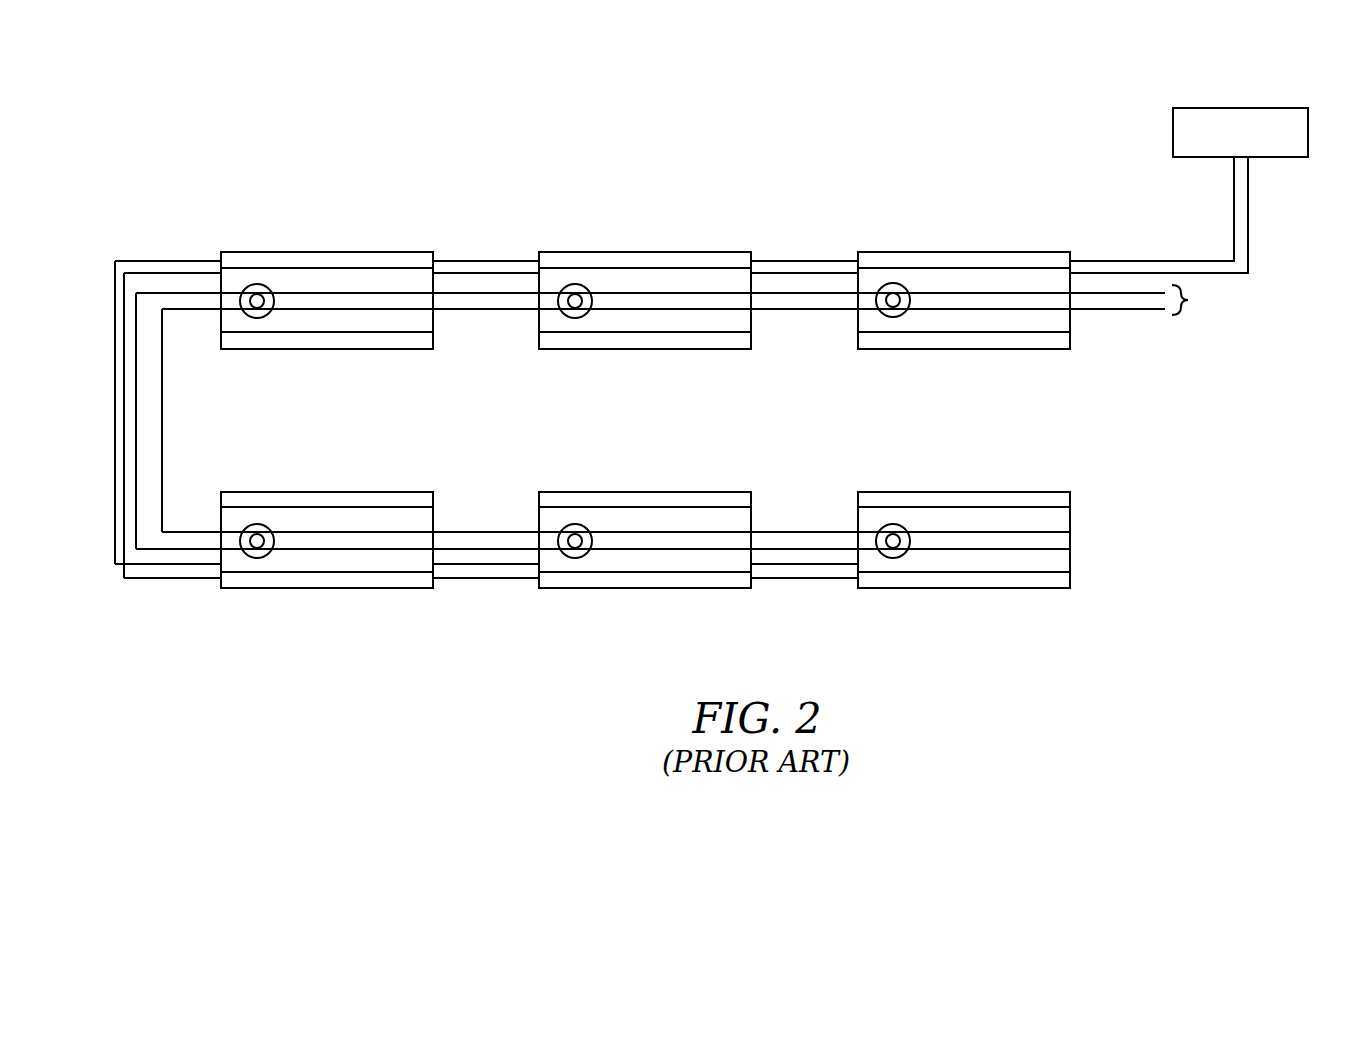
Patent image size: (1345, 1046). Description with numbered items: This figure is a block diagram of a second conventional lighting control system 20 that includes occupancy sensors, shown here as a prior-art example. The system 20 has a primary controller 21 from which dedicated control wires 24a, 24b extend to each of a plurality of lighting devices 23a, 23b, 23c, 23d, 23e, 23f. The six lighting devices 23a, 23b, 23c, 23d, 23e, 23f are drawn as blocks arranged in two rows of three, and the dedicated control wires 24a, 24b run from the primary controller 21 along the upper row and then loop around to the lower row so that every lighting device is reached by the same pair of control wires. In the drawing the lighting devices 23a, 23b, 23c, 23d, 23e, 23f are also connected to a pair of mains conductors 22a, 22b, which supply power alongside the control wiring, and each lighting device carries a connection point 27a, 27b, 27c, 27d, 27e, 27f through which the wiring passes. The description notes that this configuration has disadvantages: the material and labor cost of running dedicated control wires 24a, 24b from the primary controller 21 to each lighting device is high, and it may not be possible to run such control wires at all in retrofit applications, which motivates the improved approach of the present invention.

The system 20 is at (1207, 540).
The primary controller 21 is at (1240, 107).
The mains wire 22a is at (1197, 324).
The mains wire 22b is at (1242, 347).
The lighting device 23a is at (965, 252).
The lighting device 23b is at (645, 252).
The lighting device 23c is at (328, 252).
The lighting device 23d is at (328, 589).
The lighting device 23e is at (643, 589).
The lighting device 23f is at (963, 589).
The dedicated control wire 24a is at (1150, 260).
The dedicated control wire 24b is at (1248, 215).
The connector 27a is at (893, 317).
The connector 27b is at (575, 318).
The connector 27c is at (257, 318).
The connector 27d is at (257, 558).
The connector 27e is at (575, 558).
The connector 27f is at (893, 558).